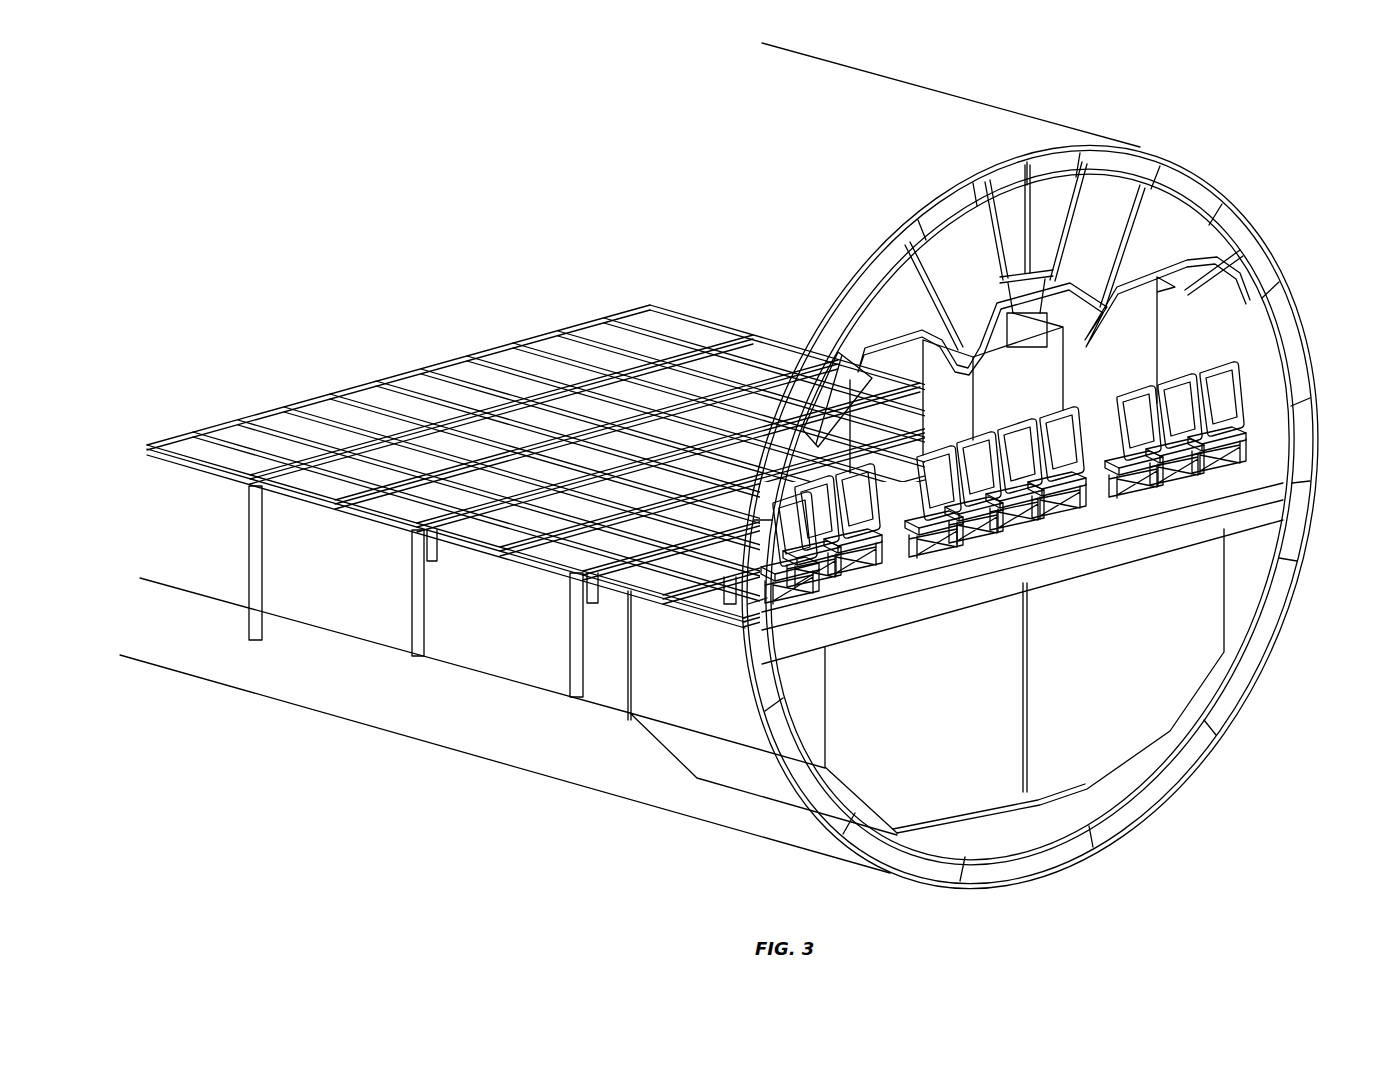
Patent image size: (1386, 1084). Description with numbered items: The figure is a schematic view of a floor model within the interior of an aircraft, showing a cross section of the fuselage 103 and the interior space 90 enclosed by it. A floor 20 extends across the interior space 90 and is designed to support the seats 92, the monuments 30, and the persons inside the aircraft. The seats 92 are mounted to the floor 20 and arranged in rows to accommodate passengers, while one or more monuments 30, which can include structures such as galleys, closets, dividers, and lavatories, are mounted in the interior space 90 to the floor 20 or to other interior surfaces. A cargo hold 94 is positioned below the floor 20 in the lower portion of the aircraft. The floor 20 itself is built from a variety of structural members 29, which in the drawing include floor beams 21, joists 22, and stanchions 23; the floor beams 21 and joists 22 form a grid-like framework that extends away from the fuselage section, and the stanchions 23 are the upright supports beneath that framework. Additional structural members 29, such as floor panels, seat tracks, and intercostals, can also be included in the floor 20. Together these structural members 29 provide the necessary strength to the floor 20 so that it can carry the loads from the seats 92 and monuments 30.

The fuselage 103 is at (1180, 163).
The interior space 90 is at (1172, 232).
The monument 30 is at (1033, 393).
The seats 92 is at (1232, 420).
The floor 20 is at (1280, 516).
The cargo hold 94 is at (1250, 563).
The floor beams 21 is at (340, 438).
The joists 22 is at (512, 370).
The stanchions 23 is at (568, 642).
The structural members 29 is at (332, 530).